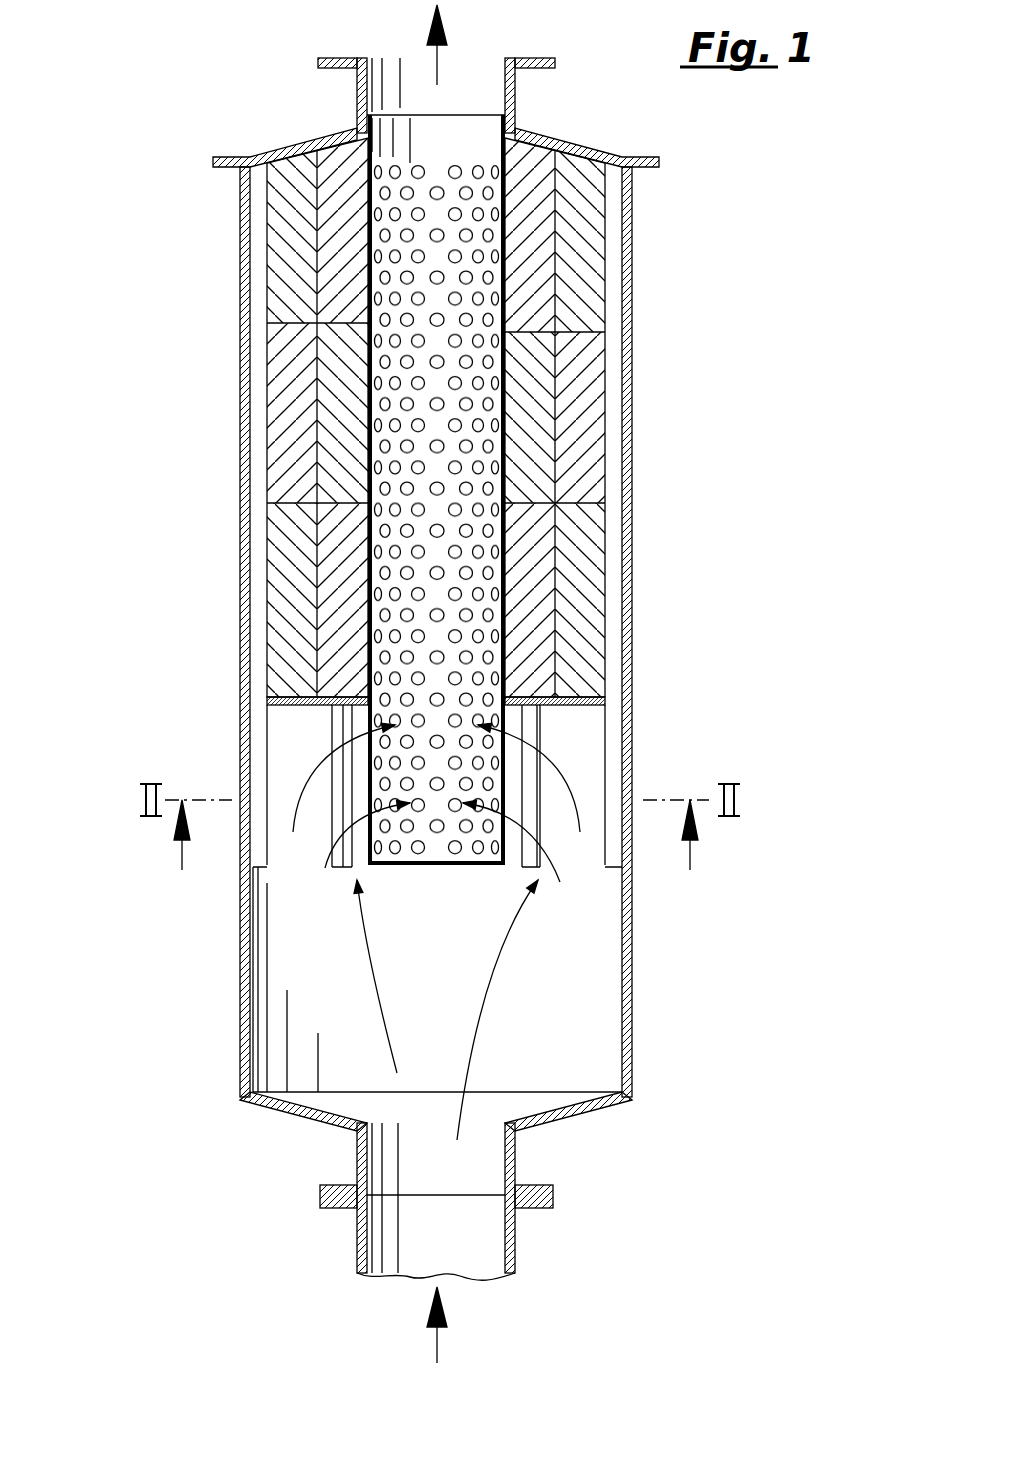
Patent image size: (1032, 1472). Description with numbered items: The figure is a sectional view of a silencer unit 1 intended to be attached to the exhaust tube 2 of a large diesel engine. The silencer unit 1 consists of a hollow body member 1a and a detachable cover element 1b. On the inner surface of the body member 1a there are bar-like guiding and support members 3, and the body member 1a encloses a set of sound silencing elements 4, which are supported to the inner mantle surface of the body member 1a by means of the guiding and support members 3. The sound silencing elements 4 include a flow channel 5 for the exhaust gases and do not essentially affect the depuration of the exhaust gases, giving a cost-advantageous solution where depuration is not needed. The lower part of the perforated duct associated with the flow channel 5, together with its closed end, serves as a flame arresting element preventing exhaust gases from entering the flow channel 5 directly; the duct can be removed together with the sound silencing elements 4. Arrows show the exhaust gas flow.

The silencer unit 1 is at (232, 477).
The hollow body member 1a is at (243, 973).
The detachable cover element 1b is at (290, 148).
The exhaust tube 2 is at (357, 1251).
The guiding and support members 3 is at (334, 870).
The sound silencing elements 4 is at (588, 241).
The flow channel 5 is at (465, 123).